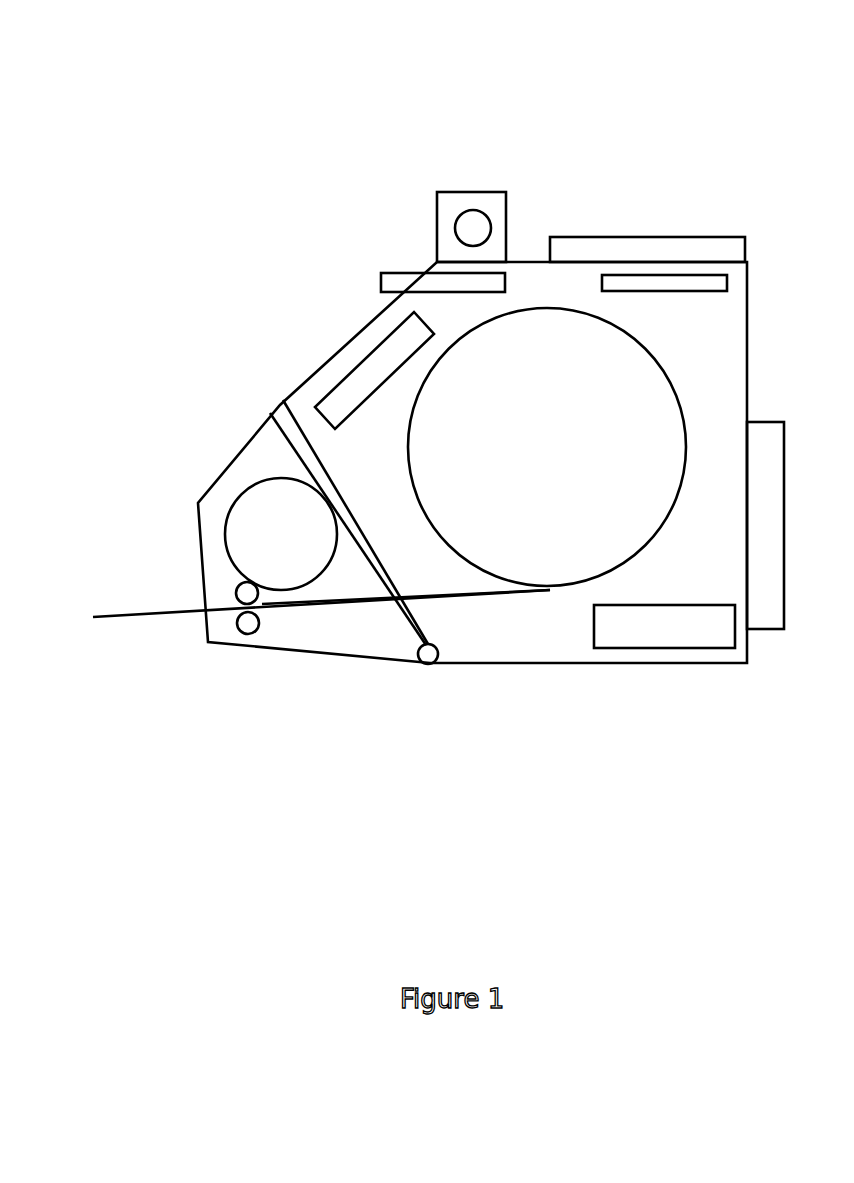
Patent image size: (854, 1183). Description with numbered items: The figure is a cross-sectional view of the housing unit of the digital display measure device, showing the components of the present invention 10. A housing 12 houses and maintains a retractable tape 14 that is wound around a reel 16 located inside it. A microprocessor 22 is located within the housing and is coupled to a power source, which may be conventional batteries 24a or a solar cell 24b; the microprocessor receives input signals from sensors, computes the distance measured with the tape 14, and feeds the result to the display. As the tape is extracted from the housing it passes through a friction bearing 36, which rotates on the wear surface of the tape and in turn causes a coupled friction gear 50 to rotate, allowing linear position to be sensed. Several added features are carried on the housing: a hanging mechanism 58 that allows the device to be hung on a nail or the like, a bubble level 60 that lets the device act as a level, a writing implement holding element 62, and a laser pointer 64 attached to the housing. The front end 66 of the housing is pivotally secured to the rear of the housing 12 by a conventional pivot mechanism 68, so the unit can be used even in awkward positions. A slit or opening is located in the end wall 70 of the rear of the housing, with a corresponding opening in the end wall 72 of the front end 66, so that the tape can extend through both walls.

The present invention 10 is at (694, 56).
The housing 12 is at (472, 515).
The retractable tape 14 is at (295, 576).
The reel 16 is at (554, 445).
The microprocessor 22 is at (348, 354).
The batteries 24a is at (674, 674).
The solar cell 24b is at (708, 335).
The friction bearing 36 is at (192, 613).
The friction gear 50 is at (240, 515).
The hanging mechanism 58 is at (421, 194).
The bubble level 60 is at (658, 217).
The writing implement holding element 62 is at (797, 567).
The laser pointer 64 is at (391, 249).
The front end 66 is at (183, 420).
The pivot mechanism 68 is at (378, 688).
The end wall of the rear of the housing 70 is at (315, 476).
The end wall of the front end 72 is at (293, 496).